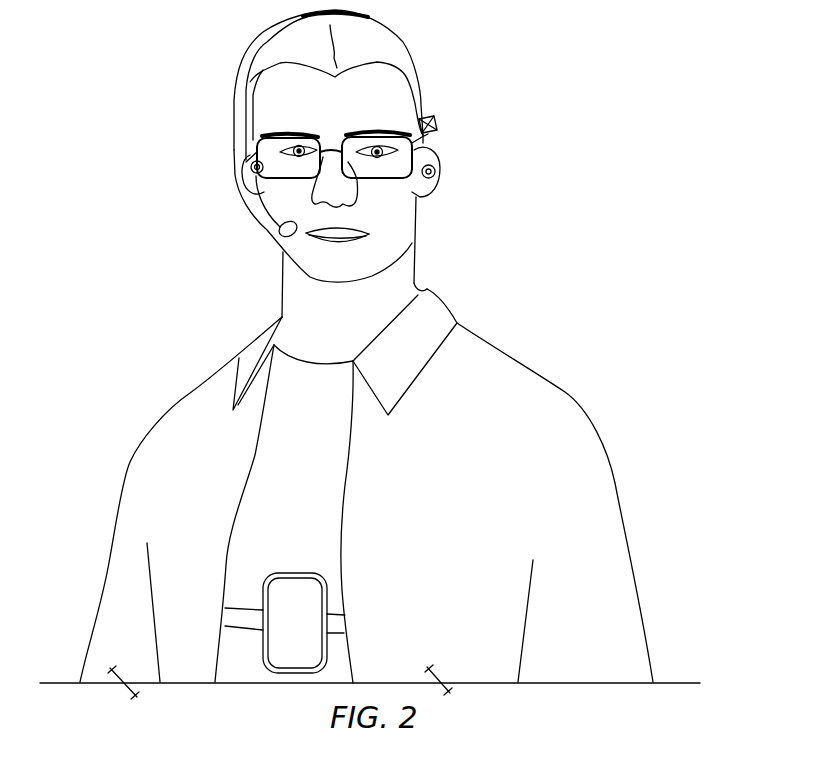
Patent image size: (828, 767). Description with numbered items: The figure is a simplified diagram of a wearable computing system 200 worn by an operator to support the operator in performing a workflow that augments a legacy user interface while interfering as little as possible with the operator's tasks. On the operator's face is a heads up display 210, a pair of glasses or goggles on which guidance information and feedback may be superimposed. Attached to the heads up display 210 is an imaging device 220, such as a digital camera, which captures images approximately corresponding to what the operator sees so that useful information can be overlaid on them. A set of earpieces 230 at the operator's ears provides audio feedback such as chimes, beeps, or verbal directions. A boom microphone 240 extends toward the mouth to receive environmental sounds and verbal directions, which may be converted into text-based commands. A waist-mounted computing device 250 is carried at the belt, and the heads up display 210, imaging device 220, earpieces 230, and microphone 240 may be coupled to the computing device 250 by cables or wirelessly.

The wearable computing system 200 is at (166, 73).
The heads up display 210 is at (418, 193).
The imaging device 220 is at (437, 127).
The earpieces 230 is at (249, 169).
The microphone 240 is at (280, 231).
The computing device 250 is at (290, 571).